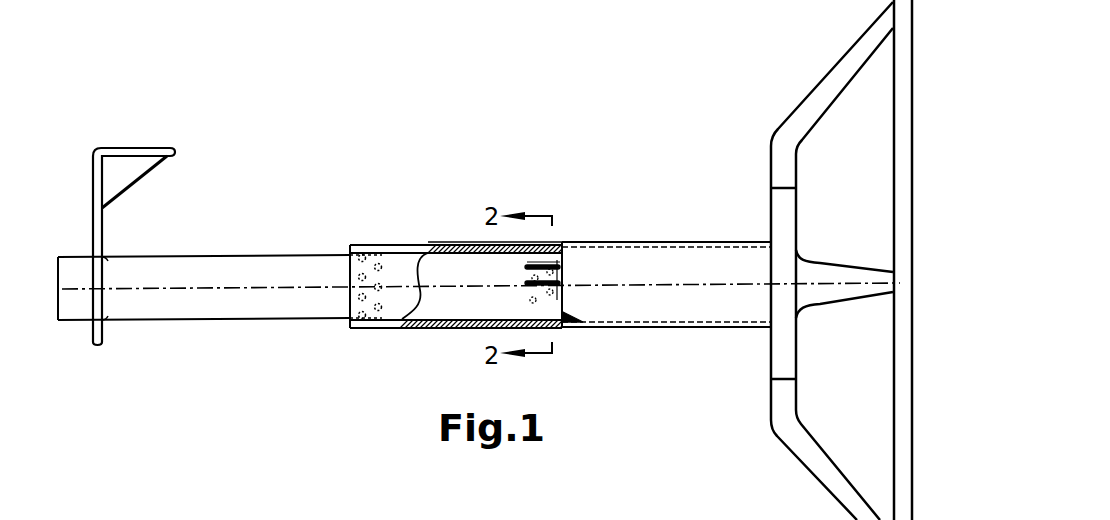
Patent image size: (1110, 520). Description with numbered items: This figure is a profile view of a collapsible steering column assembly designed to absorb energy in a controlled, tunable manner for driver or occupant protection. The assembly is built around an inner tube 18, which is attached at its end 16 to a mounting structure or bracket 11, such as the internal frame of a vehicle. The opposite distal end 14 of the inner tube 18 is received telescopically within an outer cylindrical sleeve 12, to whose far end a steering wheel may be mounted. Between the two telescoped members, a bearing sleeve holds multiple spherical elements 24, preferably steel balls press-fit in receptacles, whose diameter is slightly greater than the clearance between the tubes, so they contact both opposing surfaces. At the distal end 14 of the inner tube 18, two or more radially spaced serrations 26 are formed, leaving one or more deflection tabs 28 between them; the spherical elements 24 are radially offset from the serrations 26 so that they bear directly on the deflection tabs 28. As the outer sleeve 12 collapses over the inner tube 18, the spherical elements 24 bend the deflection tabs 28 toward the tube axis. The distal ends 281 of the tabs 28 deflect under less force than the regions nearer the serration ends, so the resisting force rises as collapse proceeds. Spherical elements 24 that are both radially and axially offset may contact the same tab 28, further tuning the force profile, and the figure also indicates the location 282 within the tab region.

The mounting bracket 11 is at (93, 213).
The outer cylindrical sleeve 12 is at (700, 328).
The distal end of inner tube 14 is at (580, 321).
The end of inner tube 16 is at (75, 321).
The inner tube 18 is at (247, 319).
The spherical elements 24 is at (358, 330).
The serrations 26 is at (565, 262).
The deflection tabs 28 is at (565, 288).
The distal ends of deflection tabs 281 is at (565, 280).
The lower pin 282 is at (525, 276).